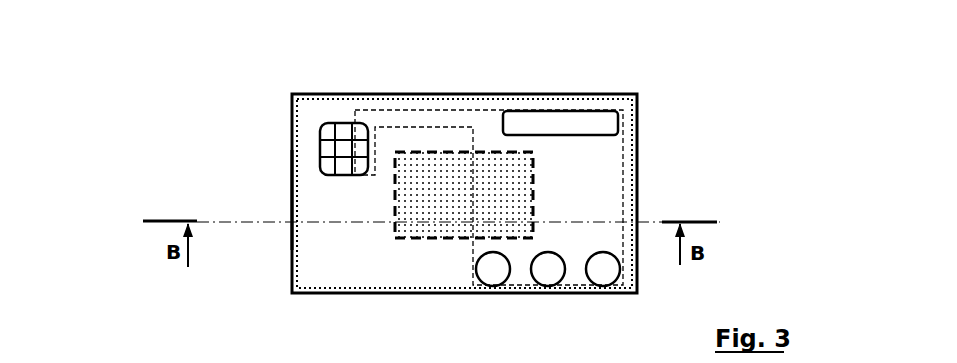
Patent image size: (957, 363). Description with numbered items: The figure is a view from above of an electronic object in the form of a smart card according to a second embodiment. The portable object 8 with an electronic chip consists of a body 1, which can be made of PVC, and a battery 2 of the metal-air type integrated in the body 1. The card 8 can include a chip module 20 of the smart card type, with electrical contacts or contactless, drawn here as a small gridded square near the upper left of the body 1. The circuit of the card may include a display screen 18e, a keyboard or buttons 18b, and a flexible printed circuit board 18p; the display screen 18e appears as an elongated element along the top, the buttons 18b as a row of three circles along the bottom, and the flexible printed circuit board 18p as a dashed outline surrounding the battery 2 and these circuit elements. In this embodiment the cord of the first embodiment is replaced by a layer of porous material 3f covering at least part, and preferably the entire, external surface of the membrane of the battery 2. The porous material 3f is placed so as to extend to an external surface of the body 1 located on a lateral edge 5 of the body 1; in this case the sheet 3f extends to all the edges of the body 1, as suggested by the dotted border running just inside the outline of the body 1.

The body 1 is at (302, 105).
The battery 2 is at (538, 197).
The layer of porous material 3f is at (299, 259).
The lateral edge 5 is at (290, 196).
The portable object 8 is at (673, 80).
The keyboard or buttons 18b is at (603, 274).
The display screen 18e is at (608, 123).
The flexible printed circuit board 18p is at (623, 198).
The chip module 20 is at (318, 148).